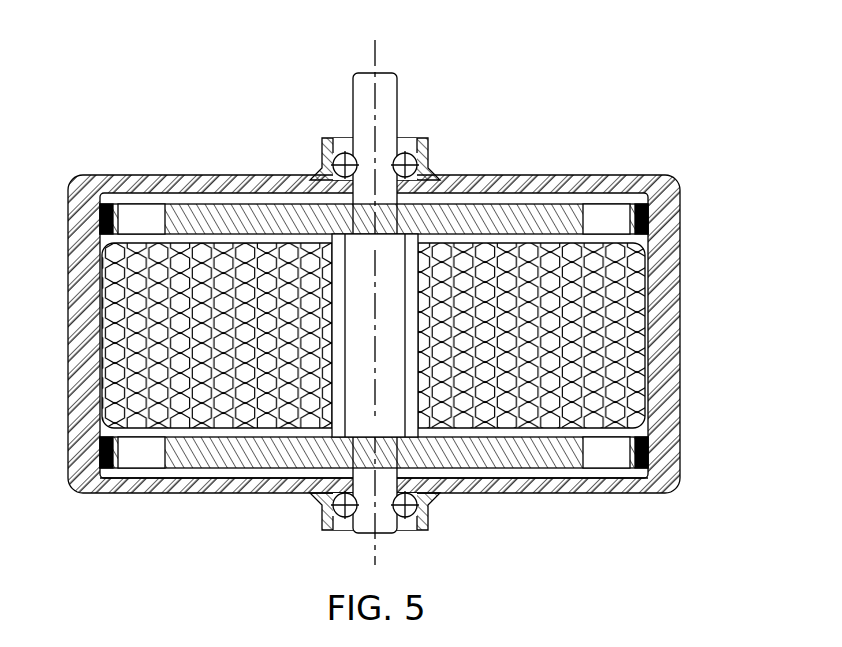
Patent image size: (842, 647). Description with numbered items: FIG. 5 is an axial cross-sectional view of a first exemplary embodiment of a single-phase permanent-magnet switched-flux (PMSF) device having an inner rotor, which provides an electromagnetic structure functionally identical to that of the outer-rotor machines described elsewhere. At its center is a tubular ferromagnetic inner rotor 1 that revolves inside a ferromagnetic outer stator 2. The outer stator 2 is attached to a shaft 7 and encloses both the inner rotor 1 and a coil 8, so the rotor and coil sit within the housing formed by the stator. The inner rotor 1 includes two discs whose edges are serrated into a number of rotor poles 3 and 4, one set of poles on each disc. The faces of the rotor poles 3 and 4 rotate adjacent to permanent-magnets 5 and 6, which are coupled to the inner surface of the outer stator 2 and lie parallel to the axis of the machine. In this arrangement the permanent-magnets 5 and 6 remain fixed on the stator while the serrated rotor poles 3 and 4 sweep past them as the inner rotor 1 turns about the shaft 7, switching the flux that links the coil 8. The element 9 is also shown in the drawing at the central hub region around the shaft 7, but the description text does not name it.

The magnetic pole plate 1 is at (505, 220).
The housing 2 is at (668, 268).
The upper coil winding 3 is at (150, 215).
The lower coil winding 4 is at (153, 457).
The permanent magnet 5 is at (97, 197).
The housing end wall 6 is at (85, 488).
The shaft 7 is at (388, 123).
The honeycomb rotor core 8 is at (108, 300).
The hub 9 is at (398, 272).